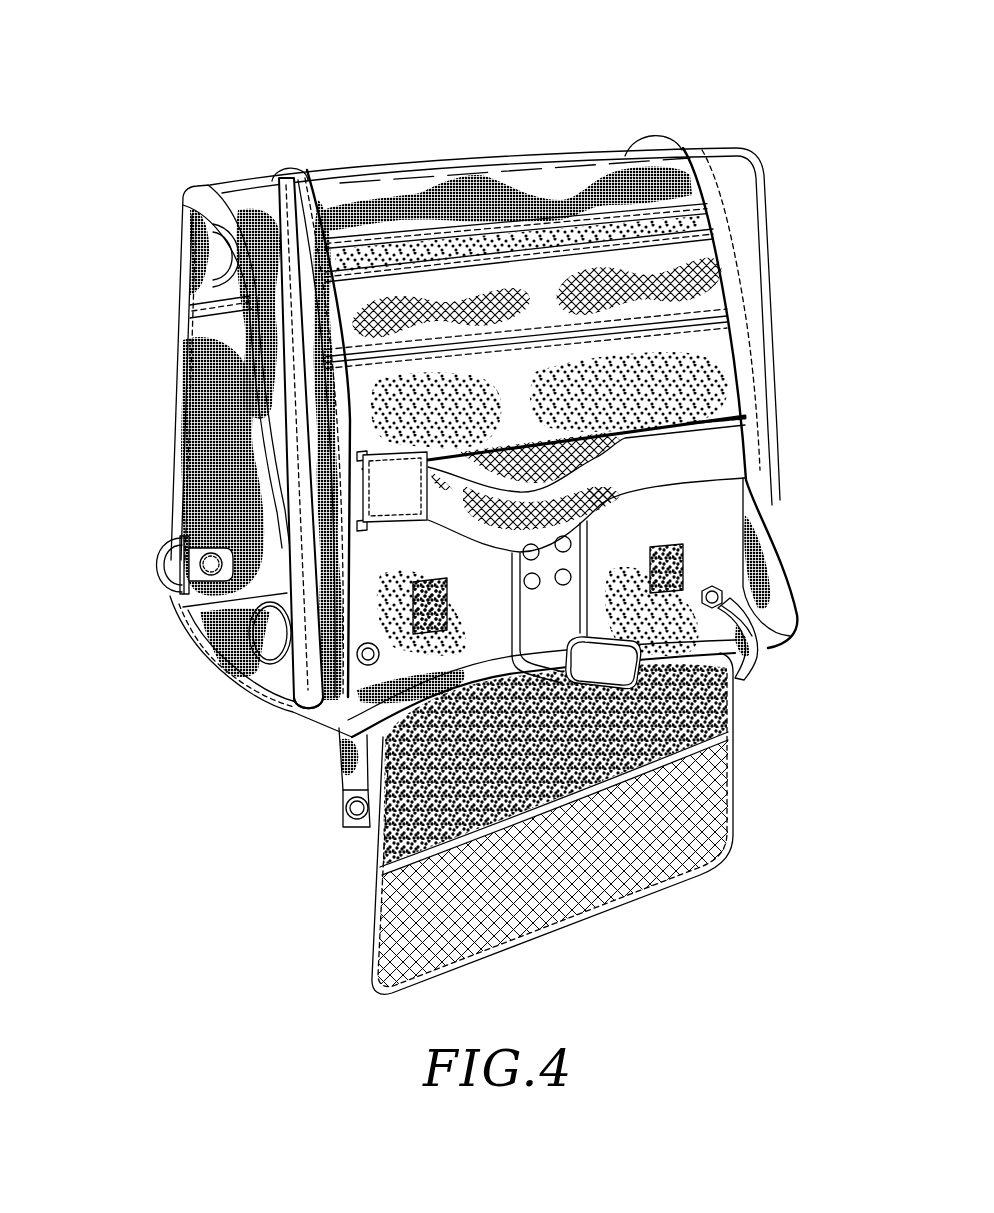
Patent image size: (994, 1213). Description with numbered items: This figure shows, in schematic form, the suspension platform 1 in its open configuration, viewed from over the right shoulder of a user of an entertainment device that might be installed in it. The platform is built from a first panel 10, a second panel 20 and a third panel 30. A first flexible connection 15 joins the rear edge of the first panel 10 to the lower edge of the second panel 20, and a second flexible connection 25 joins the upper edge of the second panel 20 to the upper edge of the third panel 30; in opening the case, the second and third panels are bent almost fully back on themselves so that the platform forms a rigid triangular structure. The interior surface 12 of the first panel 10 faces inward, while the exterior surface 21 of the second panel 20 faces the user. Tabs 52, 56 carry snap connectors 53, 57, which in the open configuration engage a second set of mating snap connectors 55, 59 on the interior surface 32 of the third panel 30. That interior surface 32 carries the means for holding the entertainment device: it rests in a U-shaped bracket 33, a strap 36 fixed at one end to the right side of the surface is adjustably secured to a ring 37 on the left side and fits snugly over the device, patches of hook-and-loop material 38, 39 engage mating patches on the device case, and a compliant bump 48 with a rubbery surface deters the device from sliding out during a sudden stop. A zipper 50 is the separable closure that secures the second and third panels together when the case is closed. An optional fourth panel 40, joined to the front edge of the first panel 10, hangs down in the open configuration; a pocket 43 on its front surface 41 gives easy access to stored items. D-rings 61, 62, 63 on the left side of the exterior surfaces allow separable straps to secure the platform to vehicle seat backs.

The suspension platform 1 is at (754, 110).
The first panel 10 is at (193, 648).
The interior surface of panel 10 12 is at (220, 620).
The first flexible connection 15 is at (178, 617).
The second panel 20 is at (175, 318).
The exterior surface of second panel 21 is at (223, 443).
The second flexible connection 25 is at (487, 140).
The third panel 30 is at (287, 693).
The interior surface of third panel 32 is at (710, 523).
The U-shaped bracket 33 is at (612, 670).
The strap 36 is at (733, 450).
The ring 37 is at (363, 483).
The patch of hook-and-loop material 38 is at (393, 495).
The patch of hook-and-loop material 39 is at (742, 414).
The fourth panel 40 is at (370, 890).
The front surface of panel 40 41 is at (347, 803).
The pocket 43 is at (697, 737).
The compliant bump 48 is at (673, 292).
The zipper 50 is at (270, 152).
The tab 52 is at (337, 843).
The snap connector 53 is at (343, 832).
The mating snap connector 55 is at (337, 713).
The tab 56 is at (742, 672).
The snap connector 57 is at (735, 612).
The mating snap connector 59 is at (727, 593).
The D-ring 61 is at (152, 565).
The D-ring 62 is at (213, 246).
The D-ring 63 is at (257, 660).